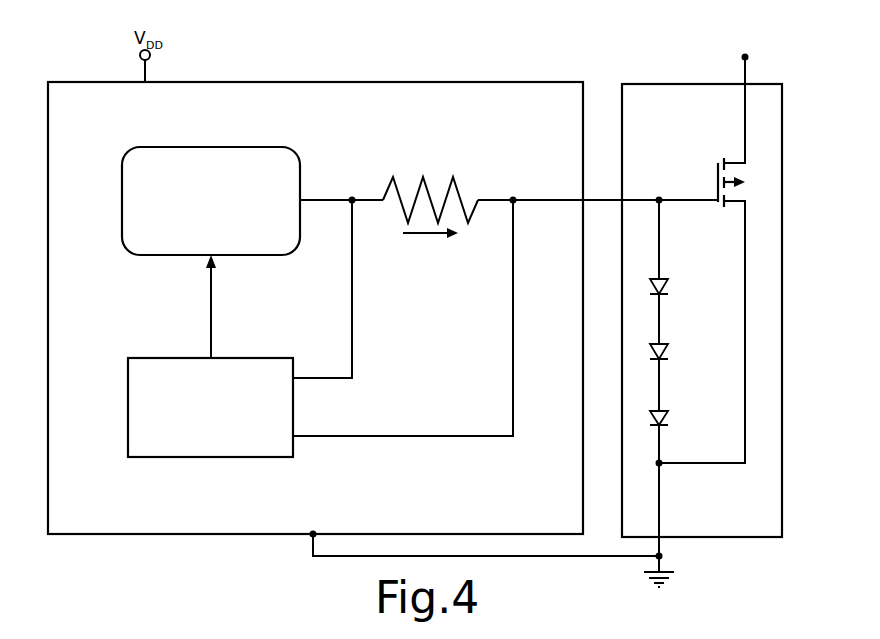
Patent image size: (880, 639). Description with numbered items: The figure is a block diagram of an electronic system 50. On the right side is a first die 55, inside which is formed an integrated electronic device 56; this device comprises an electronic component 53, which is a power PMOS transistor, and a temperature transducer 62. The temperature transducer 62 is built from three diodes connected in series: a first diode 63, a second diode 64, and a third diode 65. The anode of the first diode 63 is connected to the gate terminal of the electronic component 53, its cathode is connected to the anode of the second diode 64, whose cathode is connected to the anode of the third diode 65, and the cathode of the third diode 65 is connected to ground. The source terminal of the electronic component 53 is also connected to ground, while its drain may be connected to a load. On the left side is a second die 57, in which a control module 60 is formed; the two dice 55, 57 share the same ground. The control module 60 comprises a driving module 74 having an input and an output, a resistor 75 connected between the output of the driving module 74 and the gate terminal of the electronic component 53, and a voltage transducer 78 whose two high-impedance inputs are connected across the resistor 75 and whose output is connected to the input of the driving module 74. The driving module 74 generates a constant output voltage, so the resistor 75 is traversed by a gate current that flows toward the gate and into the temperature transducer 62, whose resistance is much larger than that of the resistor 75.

The electronic system 50 is at (788, 62).
The electronic component 53 is at (718, 172).
The first die 55 is at (776, 244).
The integrated electronic device 56 is at (650, 133).
The second die 57 is at (512, 86).
The control module 60 is at (325, 152).
The temperature transducer 62 is at (740, 354).
The first diode 63 is at (668, 283).
The second diode 64 is at (665, 350).
The third diode 65 is at (668, 420).
The driving module 74 is at (128, 190).
The resistor 75 is at (420, 186).
The voltage transducer 78 is at (230, 448).